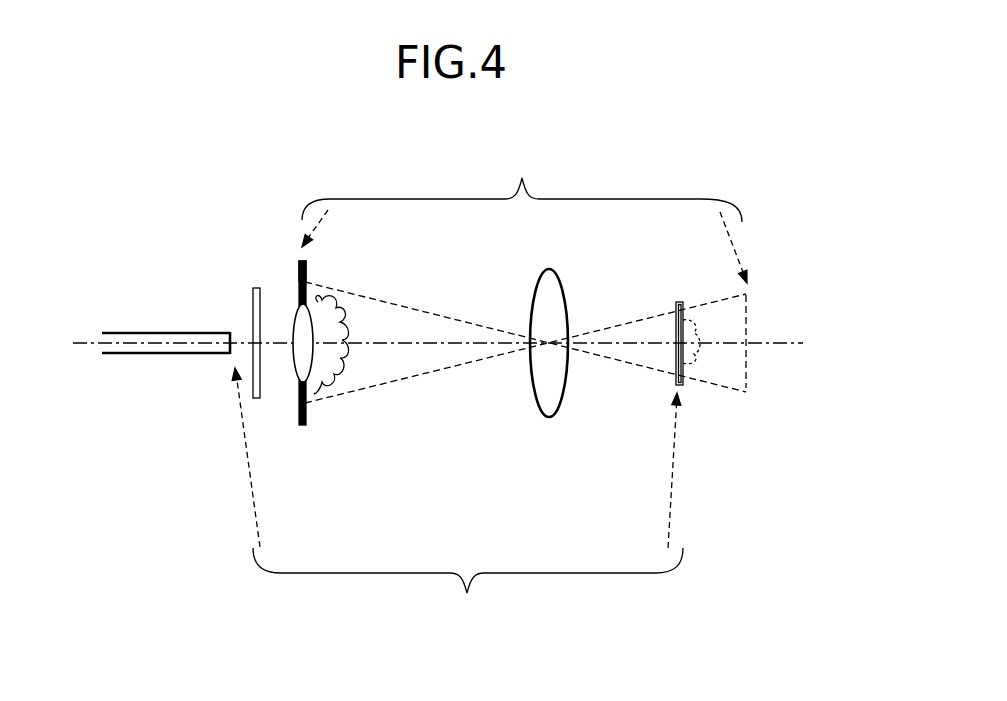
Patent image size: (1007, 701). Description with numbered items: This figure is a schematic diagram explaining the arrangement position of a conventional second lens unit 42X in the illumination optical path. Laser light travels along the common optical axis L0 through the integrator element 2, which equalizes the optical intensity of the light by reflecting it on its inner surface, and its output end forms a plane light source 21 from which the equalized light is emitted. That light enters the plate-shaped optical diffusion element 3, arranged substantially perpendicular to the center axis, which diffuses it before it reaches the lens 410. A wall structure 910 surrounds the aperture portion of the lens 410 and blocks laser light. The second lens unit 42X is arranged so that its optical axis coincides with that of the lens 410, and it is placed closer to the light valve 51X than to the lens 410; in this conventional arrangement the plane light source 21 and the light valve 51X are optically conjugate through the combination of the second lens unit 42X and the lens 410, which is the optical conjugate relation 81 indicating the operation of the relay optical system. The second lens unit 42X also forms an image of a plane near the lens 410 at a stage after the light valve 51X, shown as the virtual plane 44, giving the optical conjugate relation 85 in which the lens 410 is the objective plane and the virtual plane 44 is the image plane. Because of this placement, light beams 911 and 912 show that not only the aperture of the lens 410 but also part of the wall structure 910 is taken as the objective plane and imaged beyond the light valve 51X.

The integrator element 2 is at (177, 354).
The plane light source 21 is at (232, 333).
The optical diffusion element 3 is at (261, 303).
The lens 410 is at (299, 380).
The wall structure 910 is at (306, 275).
The light beam 911 is at (420, 307).
The light beam 912 is at (420, 378).
The second lens unit 42X is at (536, 398).
The light valve 51X is at (690, 303).
The virtual plane 44 is at (746, 388).
The optical axis L0 is at (793, 345).
The optical conjugate relation 85 is at (524, 216).
The optical conjugate relation 81 is at (457, 497).